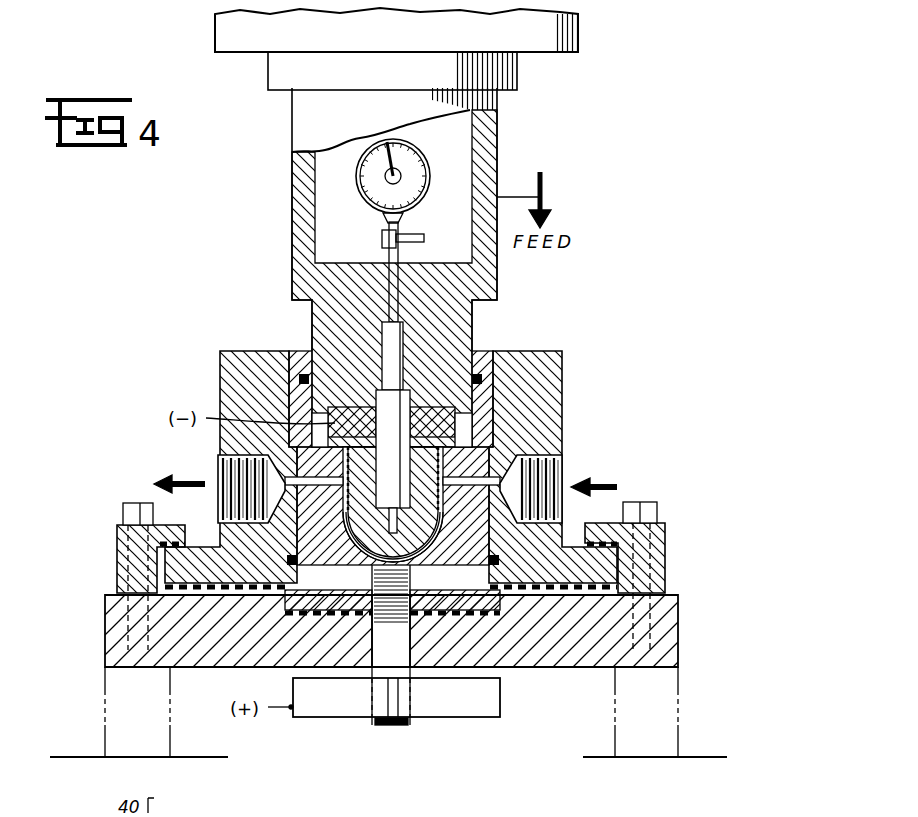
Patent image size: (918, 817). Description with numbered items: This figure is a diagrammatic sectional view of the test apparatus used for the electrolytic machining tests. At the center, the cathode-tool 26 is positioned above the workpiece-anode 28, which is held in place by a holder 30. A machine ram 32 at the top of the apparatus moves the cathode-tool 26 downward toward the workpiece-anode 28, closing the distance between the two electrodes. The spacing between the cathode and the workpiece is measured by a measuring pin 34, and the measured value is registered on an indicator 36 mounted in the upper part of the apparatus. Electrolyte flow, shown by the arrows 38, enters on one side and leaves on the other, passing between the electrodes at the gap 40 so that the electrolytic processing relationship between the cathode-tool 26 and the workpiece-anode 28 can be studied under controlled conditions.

The cathode-tool 26 is at (392, 455).
The workpiece-anode 28 is at (444, 560).
The holder 30 is at (492, 612).
The machine ram 32 is at (578, 37).
The measuring pin 34 is at (440, 438).
The indicator 36 is at (410, 160).
The electrolyte flow arrows 38 is at (192, 459).
The gap 40 is at (368, 546).